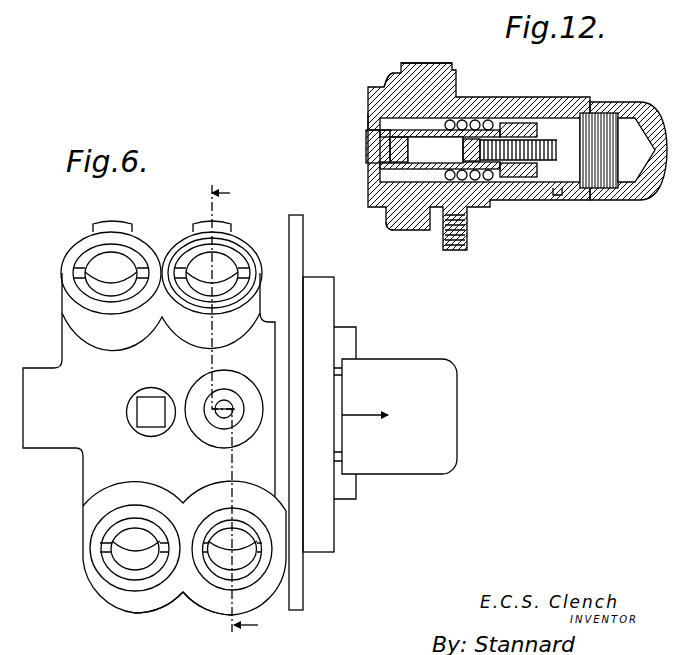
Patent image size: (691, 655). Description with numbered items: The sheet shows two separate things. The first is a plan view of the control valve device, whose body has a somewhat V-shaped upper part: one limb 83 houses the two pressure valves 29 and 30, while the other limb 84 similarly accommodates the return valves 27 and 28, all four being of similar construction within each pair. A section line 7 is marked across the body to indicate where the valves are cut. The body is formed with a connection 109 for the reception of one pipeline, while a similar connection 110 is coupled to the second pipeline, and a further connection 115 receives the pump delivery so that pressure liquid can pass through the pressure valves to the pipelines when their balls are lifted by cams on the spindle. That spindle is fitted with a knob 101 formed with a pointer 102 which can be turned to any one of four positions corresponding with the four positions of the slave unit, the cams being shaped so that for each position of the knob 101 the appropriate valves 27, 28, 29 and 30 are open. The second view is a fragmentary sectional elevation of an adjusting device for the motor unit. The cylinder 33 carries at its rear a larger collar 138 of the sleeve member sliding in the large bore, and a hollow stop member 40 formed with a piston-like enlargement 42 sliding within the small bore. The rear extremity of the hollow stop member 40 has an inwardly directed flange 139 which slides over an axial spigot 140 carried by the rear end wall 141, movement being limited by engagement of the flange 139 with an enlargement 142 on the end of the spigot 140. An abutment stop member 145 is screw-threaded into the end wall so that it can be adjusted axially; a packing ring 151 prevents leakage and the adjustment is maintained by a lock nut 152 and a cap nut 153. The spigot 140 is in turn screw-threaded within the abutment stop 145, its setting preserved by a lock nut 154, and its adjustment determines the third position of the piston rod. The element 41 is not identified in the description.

In FIG. 6, the return valve 28 is at (88, 243).
In FIG. 6, the limb 84 is at (172, 243).
In FIG. 6, the return valve 27 is at (236, 246).
In FIG. 6, the connection 115 is at (222, 429).
In FIG. 6, the pressure valve 30 is at (96, 553).
In FIG. 6, the connection 110 is at (100, 593).
In FIG. 6, the limb 83 is at (193, 592).
In FIG. 6, the connection 109 is at (213, 596).
In FIG. 6, the pressure valve 29 is at (268, 568).
In FIG. 6, the pointer 102 is at (372, 413).
In FIG. 6, the knob 101 is at (458, 403).
In FIG. 6, the section line 7 is at (235, 410).
In FIG. 12, the cylinder 33 is at (408, 70).
In FIG. 12, the packing ring 151 is at (458, 95).
In FIG. 12, the rear end wall 141 is at (470, 112).
In FIG. 12, the abutment stop member 145 is at (548, 112).
In FIG. 12, the lock nut 152 is at (580, 105).
In FIG. 12, the cap nut 153 is at (624, 103).
In FIG. 12, the larger collar 138 is at (372, 100).
In FIG. 12, the hollow stop member 40 is at (368, 128).
In FIG. 12, the spool end 41 is at (366, 148).
In FIG. 12, the piston-like enlargement 42 is at (372, 204).
In FIG. 12, the enlargement 142 is at (435, 150).
In FIG. 12, the inwardly directed flange 139 is at (480, 200).
In FIG. 12, the lock nut 154 is at (556, 192).
In FIG. 12, the axial spigot 140 is at (607, 151).